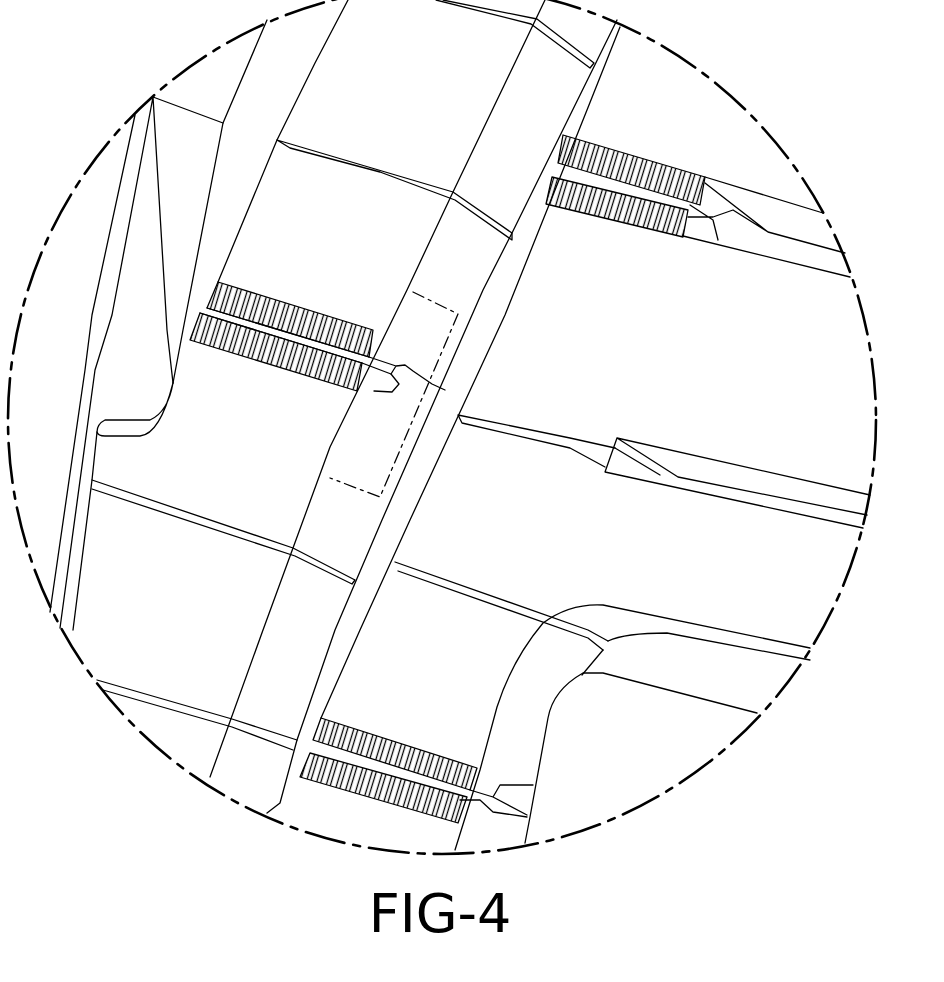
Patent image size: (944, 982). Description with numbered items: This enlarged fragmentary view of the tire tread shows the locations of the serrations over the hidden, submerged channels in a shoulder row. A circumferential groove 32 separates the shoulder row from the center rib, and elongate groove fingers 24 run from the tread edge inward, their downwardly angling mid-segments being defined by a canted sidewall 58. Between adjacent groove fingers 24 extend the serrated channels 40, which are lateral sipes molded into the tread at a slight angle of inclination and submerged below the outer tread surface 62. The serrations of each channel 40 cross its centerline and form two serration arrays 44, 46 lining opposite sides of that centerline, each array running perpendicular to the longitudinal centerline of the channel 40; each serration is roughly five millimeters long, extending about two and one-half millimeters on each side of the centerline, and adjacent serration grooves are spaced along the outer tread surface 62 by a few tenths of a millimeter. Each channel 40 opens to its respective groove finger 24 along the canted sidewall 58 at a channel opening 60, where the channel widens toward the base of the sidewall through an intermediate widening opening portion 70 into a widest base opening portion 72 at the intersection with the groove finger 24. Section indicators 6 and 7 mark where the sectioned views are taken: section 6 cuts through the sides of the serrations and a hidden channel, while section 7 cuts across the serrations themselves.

The sectioned view showing sides of serrations and a hidden channel 6 is at (462, 315).
The sectioned view of serrations 7 is at (203, 354).
The groove finger 24 is at (506, 288).
The circumferential groove 32 is at (143, 320).
The serrated channel 40 is at (274, 290).
The serration array 44 is at (321, 315).
The serration array 46 is at (238, 360).
The canted sidewall 58 is at (338, 462).
The channel opening 60 is at (442, 394).
The outer tread surface 62 is at (170, 433).
The intermediate widening opening portion 70 is at (405, 392).
The widest base opening portion 72 is at (412, 377).